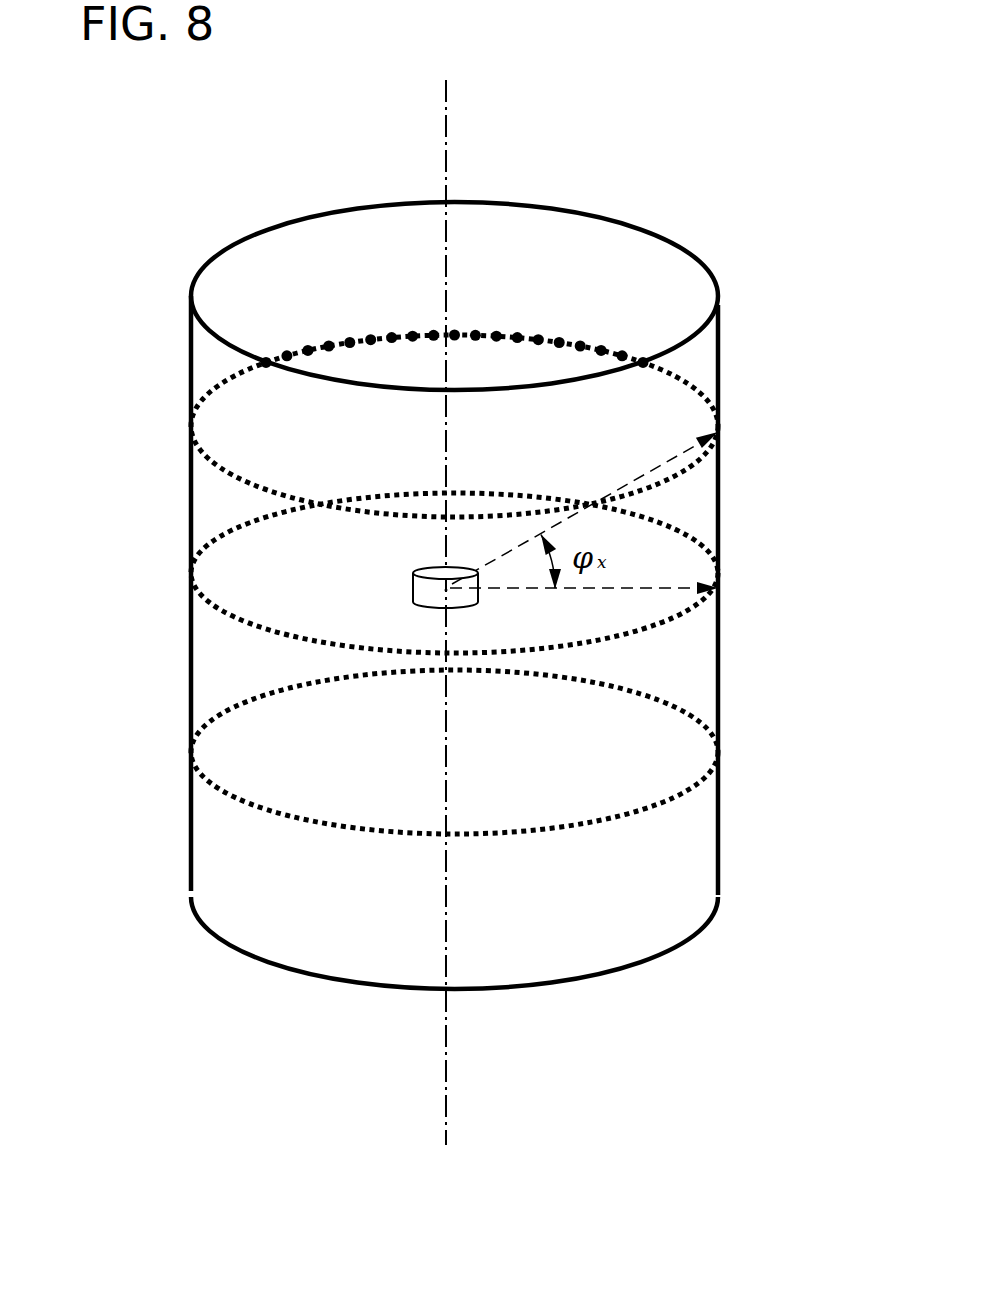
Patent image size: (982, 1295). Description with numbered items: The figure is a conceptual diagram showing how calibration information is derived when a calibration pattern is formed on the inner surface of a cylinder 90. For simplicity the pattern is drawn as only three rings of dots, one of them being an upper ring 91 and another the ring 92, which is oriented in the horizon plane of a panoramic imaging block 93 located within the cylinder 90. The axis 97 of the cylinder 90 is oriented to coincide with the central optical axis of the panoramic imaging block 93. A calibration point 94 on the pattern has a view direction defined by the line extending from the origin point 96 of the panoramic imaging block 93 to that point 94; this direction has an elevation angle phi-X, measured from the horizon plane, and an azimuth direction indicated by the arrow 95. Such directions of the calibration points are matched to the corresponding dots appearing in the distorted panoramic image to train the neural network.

The cylinder 90 is at (227, 252).
The upper ring of virtual sound source positions 91 is at (190, 432).
The ring 92 is at (225, 538).
The panoramic imaging block 93 is at (413, 588).
The calibration point 94 is at (722, 432).
The arrow 95 is at (633, 590).
The origin point 96 is at (445, 592).
The central axis of cylinder 97 is at (447, 145).